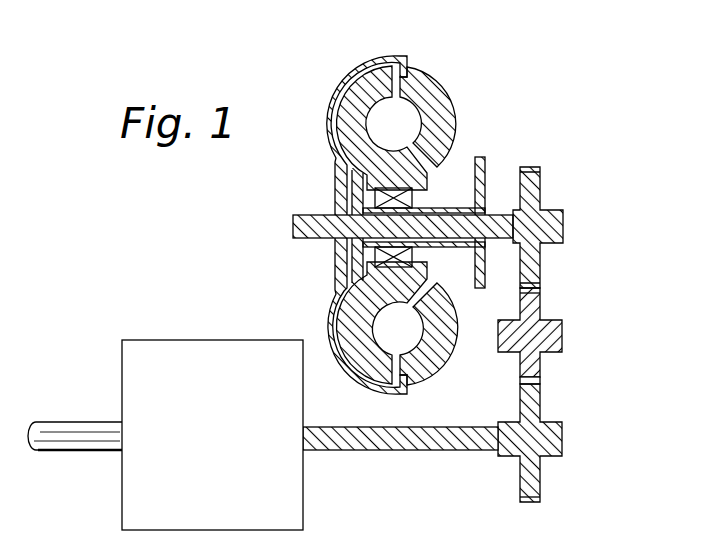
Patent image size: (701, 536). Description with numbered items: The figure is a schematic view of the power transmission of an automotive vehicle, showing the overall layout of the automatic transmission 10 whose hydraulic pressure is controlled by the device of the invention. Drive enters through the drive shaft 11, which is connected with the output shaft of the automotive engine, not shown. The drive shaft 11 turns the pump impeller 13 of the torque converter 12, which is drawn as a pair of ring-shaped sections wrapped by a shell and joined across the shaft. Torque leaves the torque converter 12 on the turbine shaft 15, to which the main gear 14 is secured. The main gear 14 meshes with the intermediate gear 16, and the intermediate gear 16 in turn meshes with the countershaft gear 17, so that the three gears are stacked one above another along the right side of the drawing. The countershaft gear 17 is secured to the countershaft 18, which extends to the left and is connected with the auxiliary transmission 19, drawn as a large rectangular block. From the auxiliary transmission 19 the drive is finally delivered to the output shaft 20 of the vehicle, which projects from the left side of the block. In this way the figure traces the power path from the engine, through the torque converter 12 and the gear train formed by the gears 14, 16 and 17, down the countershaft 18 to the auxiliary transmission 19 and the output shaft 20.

The transmission 10 is at (529, 151).
The drive shaft 11 is at (307, 215).
The torque converter 12 is at (416, 69).
The pump impeller 13 is at (441, 113).
The main gear 14 is at (537, 194).
The turbine shaft 15 is at (511, 212).
The intermediate gear 16 is at (529, 323).
The countershaft gear 17 is at (553, 423).
The countershaft 18 is at (400, 451).
The auxiliary transmission 19 is at (304, 470).
The output shaft 20 is at (76, 451).